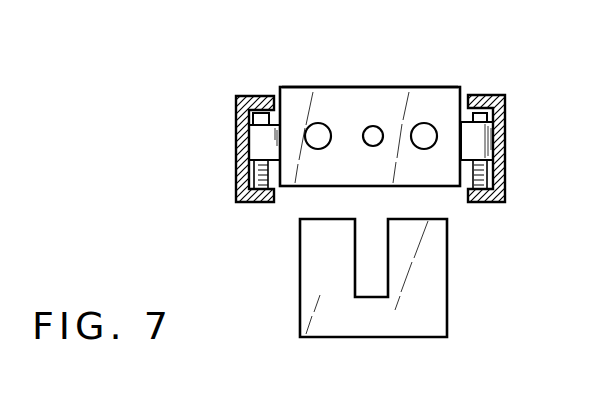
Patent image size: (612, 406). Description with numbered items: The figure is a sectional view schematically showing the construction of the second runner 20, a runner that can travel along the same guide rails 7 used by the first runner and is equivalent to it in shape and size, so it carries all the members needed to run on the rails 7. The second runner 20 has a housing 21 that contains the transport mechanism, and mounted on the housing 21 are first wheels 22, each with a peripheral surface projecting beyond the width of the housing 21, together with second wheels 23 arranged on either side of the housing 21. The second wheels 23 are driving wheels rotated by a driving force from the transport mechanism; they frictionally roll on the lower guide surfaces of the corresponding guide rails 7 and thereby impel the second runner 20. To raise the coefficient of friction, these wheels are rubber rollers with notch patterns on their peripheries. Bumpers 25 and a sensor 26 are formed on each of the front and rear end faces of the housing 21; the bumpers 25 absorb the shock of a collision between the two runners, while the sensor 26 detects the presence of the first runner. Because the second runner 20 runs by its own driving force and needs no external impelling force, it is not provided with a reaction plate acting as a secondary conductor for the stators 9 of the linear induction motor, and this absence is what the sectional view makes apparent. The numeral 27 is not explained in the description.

The guide rails 7 is at (236, 137).
The stator 9 is at (410, 338).
The second runner 20 is at (368, 80).
The housing 21 is at (352, 86).
The first wheels 22 is at (260, 151).
The second wheels 23 is at (263, 198).
The bumpers 25 is at (318, 123).
The sensor 26 is at (374, 126).
The bracket 27 is at (506, 159).